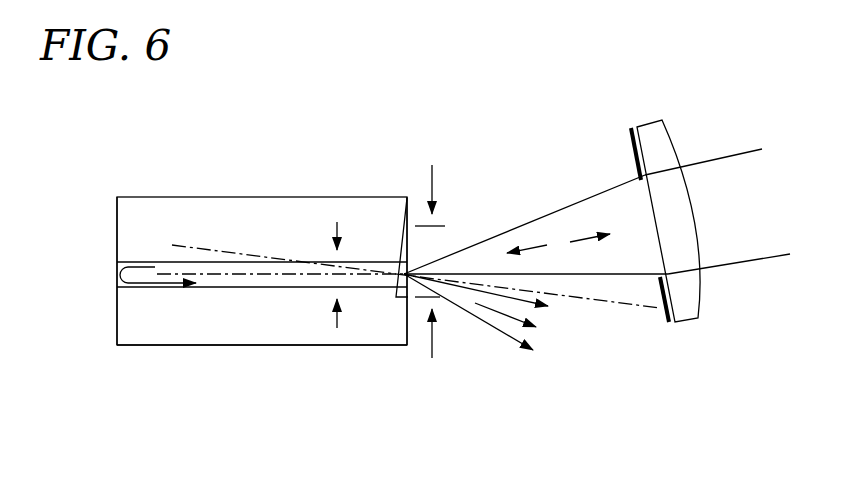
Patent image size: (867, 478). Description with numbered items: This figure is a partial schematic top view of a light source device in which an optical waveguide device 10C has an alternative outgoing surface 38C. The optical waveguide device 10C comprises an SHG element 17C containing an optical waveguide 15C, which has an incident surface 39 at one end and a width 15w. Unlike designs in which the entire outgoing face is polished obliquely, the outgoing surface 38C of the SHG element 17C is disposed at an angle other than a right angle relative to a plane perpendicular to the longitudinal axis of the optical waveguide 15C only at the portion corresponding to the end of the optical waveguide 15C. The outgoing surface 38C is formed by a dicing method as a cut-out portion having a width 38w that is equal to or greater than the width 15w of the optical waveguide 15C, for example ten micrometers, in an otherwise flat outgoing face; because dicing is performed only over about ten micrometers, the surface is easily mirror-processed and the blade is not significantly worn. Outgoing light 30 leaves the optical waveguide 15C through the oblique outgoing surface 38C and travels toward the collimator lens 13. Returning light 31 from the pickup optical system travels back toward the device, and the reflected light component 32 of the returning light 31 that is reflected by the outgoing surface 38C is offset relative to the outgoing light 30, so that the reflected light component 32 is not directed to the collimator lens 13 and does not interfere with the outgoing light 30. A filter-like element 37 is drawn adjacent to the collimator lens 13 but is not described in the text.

The optical waveguide device 10C is at (204, 190).
The incident surface 39 is at (117, 231).
The optical waveguide 15C is at (227, 282).
The SHG element 17C is at (278, 348).
The width of the optical waveguide 15w is at (365, 275).
The outgoing surface 38C is at (409, 298).
The width of the cut-out portion 38w is at (451, 261).
The returning light 31 is at (523, 248).
The outgoing light 30 is at (593, 235).
The reflected light component 32 is at (493, 317).
The collimator lens 13 is at (687, 325).
The filter 37 is at (628, 127).